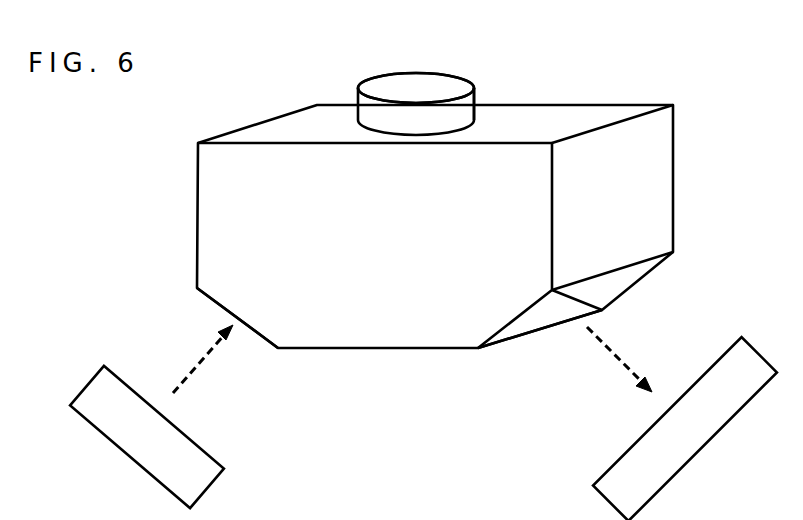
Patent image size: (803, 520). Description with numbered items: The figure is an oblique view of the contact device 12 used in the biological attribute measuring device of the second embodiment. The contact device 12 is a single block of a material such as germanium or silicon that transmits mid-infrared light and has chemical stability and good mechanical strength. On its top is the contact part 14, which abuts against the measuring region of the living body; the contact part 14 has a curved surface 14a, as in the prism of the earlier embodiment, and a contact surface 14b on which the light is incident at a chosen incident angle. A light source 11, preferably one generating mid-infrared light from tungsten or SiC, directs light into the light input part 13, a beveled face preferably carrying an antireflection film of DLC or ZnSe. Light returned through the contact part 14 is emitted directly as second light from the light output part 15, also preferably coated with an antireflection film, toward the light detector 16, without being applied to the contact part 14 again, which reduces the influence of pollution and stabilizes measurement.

The light source 11 is at (151, 416).
The contact device 12 is at (223, 185).
The light input part 13 is at (212, 303).
The contact part 14 is at (373, 110).
The curved surface 14a is at (478, 88).
The contact surface 14b is at (417, 93).
The light output part 15 is at (618, 290).
The light detector 16 is at (682, 423).